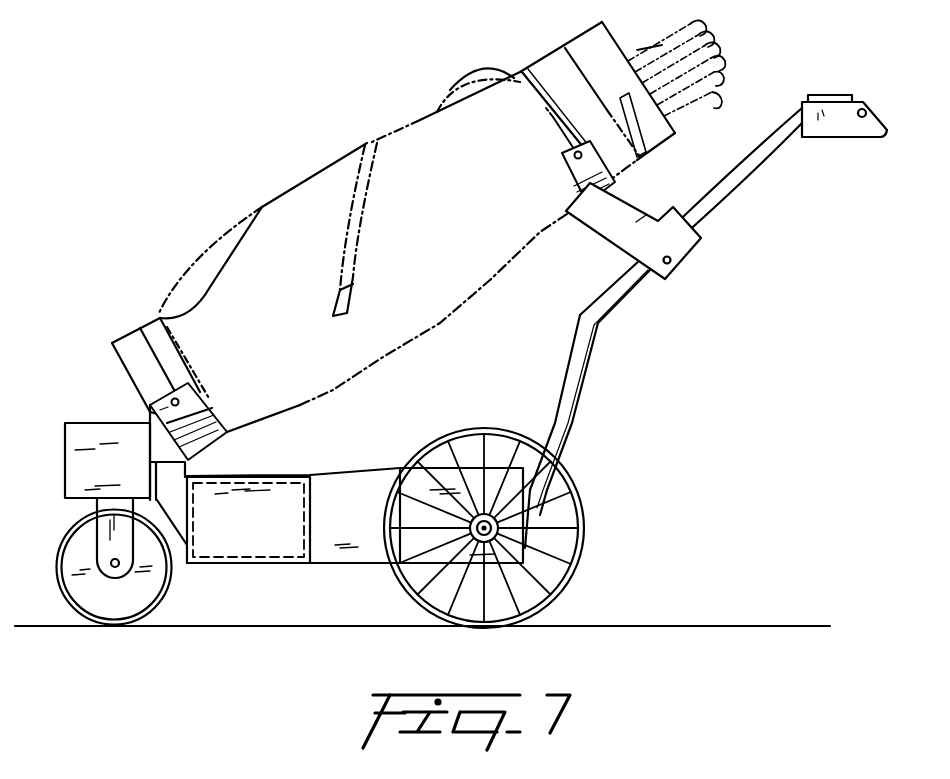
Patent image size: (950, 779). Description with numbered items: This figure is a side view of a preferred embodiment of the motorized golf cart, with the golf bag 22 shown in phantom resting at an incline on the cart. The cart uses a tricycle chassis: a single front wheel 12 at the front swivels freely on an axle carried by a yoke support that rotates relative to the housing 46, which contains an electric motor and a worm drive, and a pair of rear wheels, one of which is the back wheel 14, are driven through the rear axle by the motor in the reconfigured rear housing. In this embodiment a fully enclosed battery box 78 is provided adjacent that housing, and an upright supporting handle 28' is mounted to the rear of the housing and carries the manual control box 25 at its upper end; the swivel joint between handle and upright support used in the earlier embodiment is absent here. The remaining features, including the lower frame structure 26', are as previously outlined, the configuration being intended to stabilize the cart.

The front wheel 12 is at (80, 612).
The back wheel 14 is at (563, 500).
The golf bag 22 is at (311, 172).
The manual control box 25 is at (850, 96).
The cart body / frame 26' is at (336, 484).
The upright supporting handle 28' is at (663, 328).
The housing 46 is at (65, 447).
The fully enclosed battery box 78 is at (268, 487).